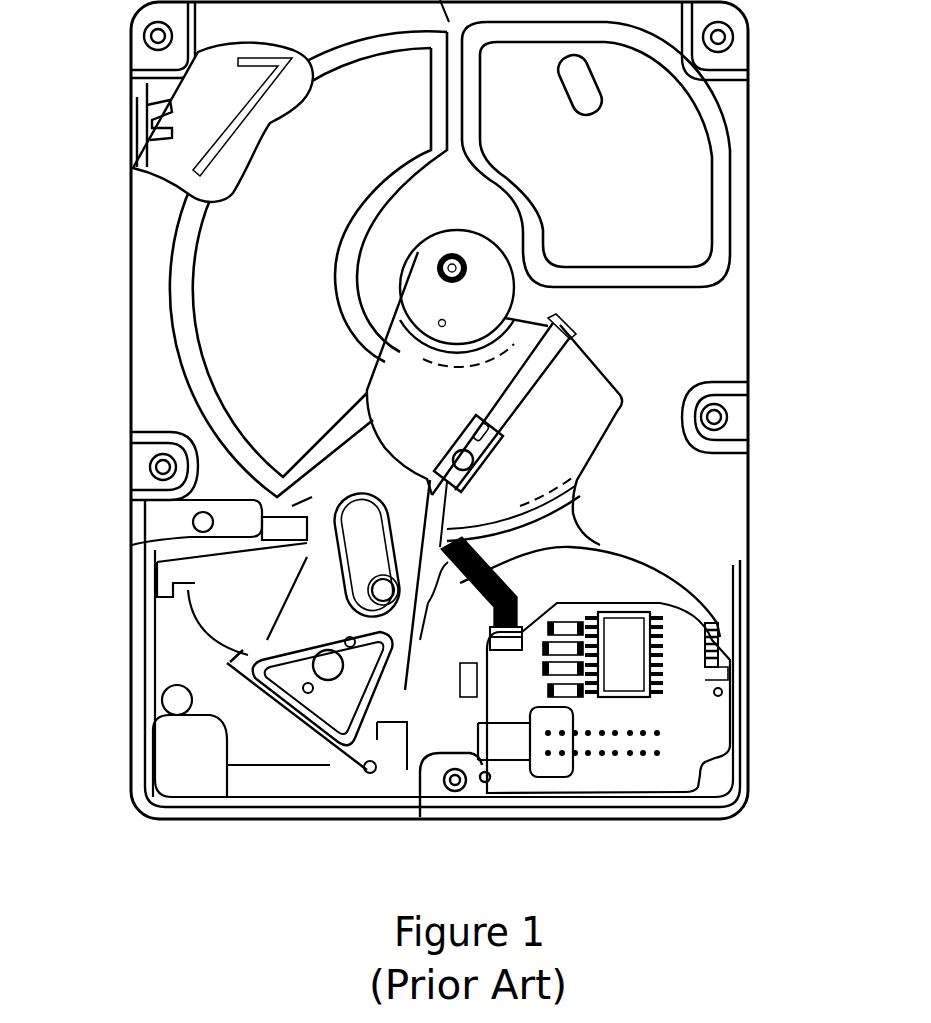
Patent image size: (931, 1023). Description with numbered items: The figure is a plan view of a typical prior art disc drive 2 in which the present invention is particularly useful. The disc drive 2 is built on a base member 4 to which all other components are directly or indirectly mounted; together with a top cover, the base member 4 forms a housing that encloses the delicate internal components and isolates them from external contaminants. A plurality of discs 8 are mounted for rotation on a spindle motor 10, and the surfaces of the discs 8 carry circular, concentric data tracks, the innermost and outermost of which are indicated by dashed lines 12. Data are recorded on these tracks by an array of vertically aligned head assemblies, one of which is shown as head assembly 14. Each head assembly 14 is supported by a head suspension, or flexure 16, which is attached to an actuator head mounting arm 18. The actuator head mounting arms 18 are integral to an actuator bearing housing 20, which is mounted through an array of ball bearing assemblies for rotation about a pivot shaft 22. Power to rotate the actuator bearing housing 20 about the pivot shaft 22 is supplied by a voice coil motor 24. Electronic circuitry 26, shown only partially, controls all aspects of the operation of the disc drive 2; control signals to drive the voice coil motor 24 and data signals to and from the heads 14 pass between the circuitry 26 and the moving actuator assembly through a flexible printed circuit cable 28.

The disc drive 2 is at (100, 440).
The base member 4 is at (134, 769).
The discs 8 is at (585, 448).
The spindle motor 10 is at (485, 258).
The data tracks 12 is at (464, 366).
The head assembly 14 is at (555, 326).
The head suspension (flexure) 16 is at (512, 393).
The actuator head mounting arm 18 is at (450, 507).
The actuator bearing housing 20 is at (350, 517).
The pivot shaft 22 is at (388, 585).
The voice coil motor (VCM) 24 is at (300, 737).
The electronic circuitry 26 is at (677, 628).
The flexible printed circuit cable (PCC) 28 is at (655, 567).